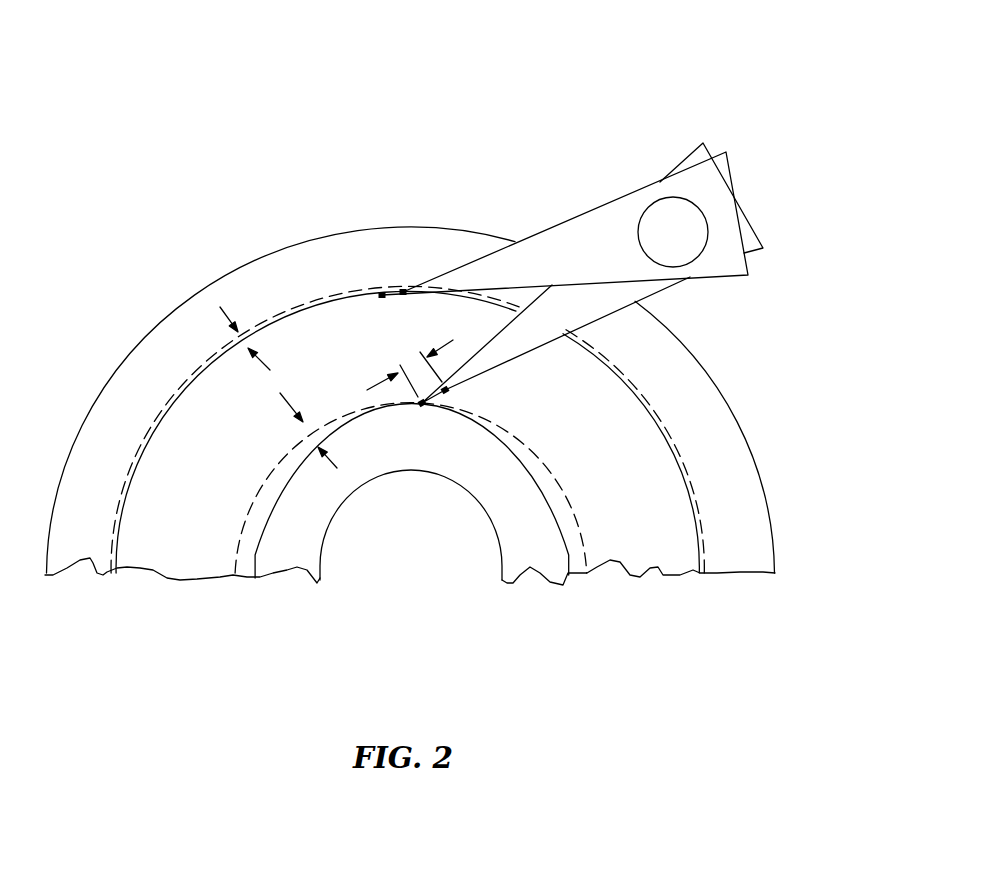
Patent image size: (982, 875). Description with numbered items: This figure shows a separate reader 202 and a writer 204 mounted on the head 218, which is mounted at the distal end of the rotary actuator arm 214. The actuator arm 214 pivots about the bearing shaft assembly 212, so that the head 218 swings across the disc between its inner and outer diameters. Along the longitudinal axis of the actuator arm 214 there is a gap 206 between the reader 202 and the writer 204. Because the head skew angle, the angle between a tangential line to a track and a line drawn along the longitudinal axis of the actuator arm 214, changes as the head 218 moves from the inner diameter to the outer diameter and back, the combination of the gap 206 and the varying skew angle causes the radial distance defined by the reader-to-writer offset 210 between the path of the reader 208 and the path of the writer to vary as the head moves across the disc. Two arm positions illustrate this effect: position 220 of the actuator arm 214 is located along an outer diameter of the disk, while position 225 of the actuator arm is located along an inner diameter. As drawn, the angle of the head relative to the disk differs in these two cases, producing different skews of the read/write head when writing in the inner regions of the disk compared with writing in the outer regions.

The reader 202 is at (407, 290).
The writer 204 is at (380, 295).
The gap 206 is at (105, 573).
The path of the reader 208 is at (112, 567).
The reader-to-writer offset 210 is at (297, 430).
The bearing shaft assembly 212 is at (673, 232).
The rotary actuator arm 214 is at (640, 192).
The head 218 is at (382, 293).
The position of the actuator arm 220 is at (565, 223).
The position of the actuator arm 225 is at (556, 340).